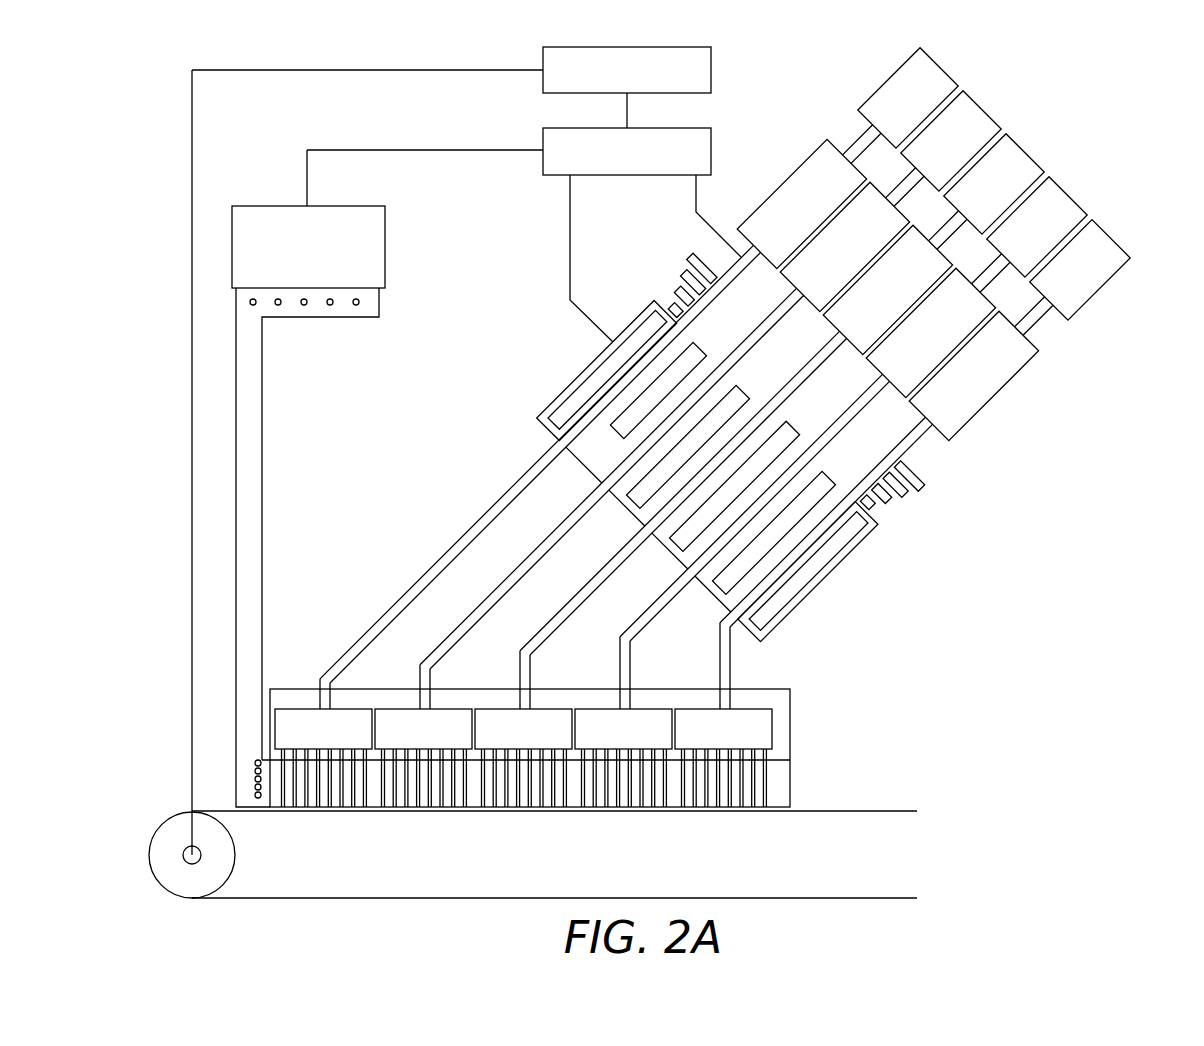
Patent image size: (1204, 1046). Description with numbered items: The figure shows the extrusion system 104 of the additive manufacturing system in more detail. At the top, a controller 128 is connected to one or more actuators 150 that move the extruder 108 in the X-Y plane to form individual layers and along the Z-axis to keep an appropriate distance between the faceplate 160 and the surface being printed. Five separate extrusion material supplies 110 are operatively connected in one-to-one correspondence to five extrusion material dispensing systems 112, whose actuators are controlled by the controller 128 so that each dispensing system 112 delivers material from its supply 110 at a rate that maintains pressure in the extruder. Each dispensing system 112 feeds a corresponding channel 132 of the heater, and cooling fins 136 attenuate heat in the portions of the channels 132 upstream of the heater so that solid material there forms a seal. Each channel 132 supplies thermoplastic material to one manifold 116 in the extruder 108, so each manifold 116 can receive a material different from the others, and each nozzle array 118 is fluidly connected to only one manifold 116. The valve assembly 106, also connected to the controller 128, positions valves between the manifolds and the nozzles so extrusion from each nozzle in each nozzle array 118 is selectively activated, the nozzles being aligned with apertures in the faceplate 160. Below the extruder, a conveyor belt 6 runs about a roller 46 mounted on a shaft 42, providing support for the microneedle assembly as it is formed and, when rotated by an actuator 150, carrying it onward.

The conveyor belt 6 is at (862, 810).
The shaft 42 is at (200, 857).
The roller 46 is at (165, 818).
The extrusion system 104 is at (1113, 129).
The valve assembly 106 is at (385, 250).
The extruder 108 is at (797, 651).
The extrusion material supply 110 is at (939, 66).
The extrusion material dispensing system 112 is at (855, 165).
The manifold 116 is at (307, 709).
The nozzle array 118 is at (337, 813).
The controller 128 is at (711, 151).
The channel 132 is at (604, 478).
The cooling fins 136 is at (700, 268).
The actuator 150 is at (711, 70).
The faceplate 160 is at (778, 808).